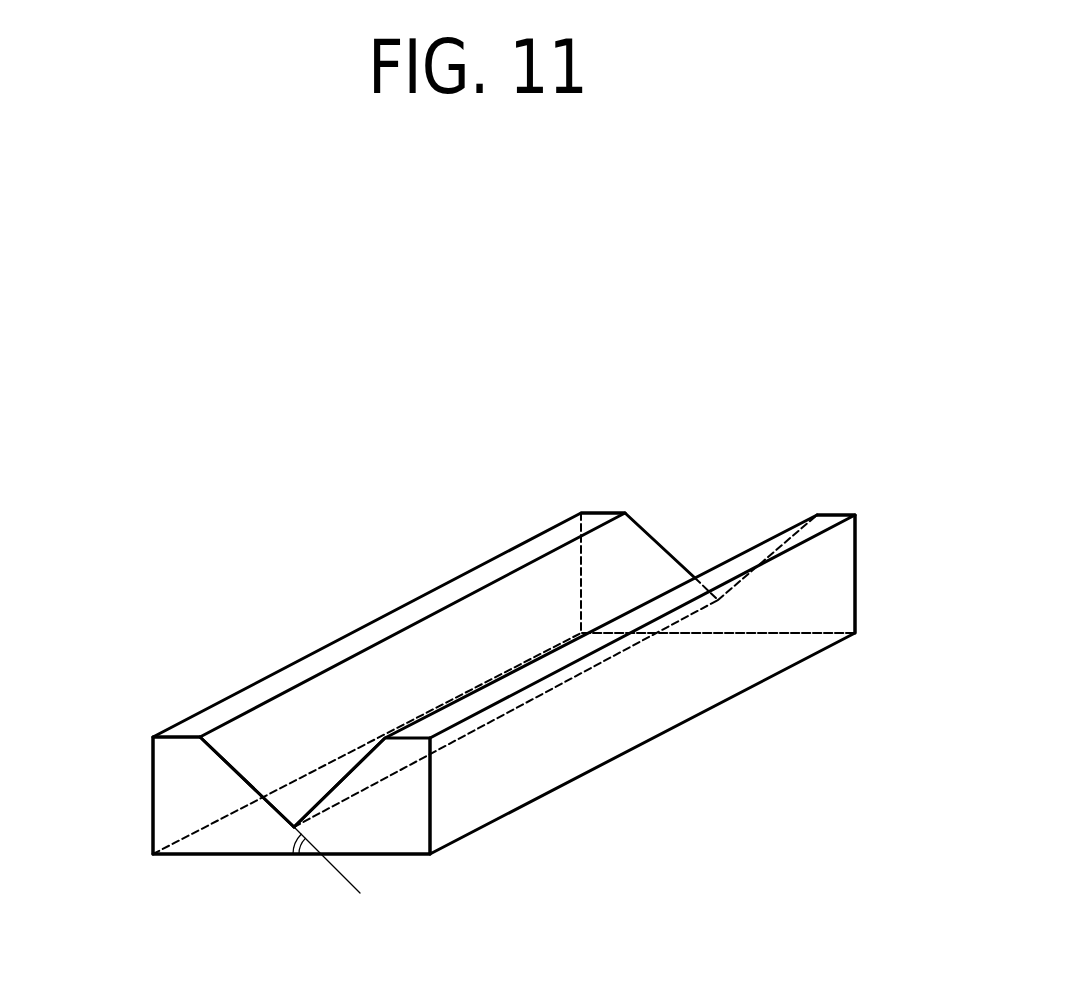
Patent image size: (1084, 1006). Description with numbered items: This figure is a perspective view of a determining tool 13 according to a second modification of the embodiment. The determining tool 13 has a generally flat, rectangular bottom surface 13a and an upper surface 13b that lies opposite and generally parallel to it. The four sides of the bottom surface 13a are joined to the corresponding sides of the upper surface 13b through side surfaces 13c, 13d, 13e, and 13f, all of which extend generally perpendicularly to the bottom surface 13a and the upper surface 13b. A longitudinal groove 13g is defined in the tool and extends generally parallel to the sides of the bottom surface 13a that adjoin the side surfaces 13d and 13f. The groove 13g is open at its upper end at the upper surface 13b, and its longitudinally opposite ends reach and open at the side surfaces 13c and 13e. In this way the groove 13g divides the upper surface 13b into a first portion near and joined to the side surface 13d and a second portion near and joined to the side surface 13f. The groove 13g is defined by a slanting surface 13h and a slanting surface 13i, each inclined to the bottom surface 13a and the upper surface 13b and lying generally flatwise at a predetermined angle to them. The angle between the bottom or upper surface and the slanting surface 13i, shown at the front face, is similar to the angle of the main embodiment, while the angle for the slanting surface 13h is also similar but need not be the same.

The determining tool 13 is at (382, 469).
The bottom surface 13a is at (473, 813).
The upper surface 13b is at (482, 700).
The side surface 13c is at (237, 835).
The side surface 13d is at (675, 707).
The side surface 13e is at (842, 580).
The side surface 13f is at (175, 773).
The groove 13g is at (773, 428).
The slanting surface 13h is at (733, 567).
The slanting surface 13i is at (653, 568).